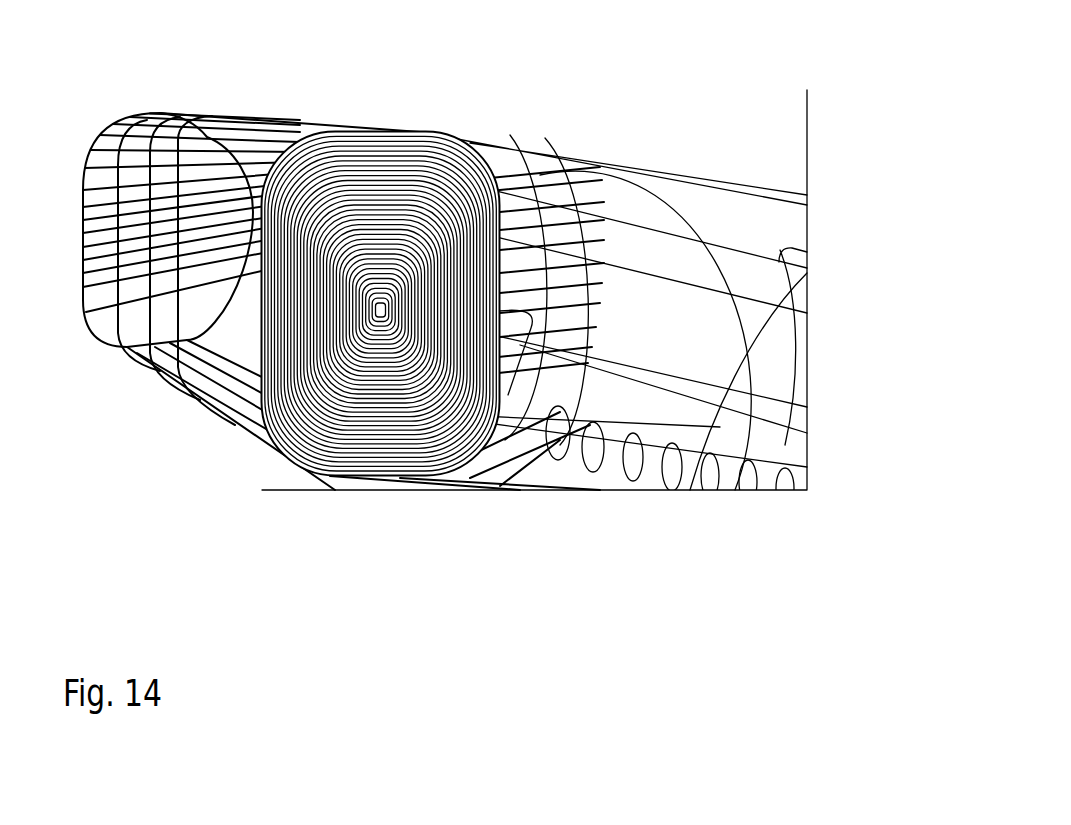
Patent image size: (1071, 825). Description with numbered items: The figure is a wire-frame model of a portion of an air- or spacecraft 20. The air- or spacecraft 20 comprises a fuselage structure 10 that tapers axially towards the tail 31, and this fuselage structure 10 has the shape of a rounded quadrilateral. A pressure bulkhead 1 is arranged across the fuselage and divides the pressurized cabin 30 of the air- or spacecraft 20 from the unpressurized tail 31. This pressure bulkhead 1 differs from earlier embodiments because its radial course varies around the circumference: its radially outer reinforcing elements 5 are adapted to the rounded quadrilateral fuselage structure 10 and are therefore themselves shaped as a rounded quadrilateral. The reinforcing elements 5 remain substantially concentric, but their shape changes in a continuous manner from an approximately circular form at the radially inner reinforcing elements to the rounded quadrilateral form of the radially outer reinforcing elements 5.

The pressure bulkhead 1 is at (381, 253).
The reinforcing elements 5 is at (313, 187).
The fuselage structure 10 is at (135, 350).
The air- or spacecraft 20 is at (445, 314).
The pressurized cabin 30 is at (568, 515).
The tail 31 is at (343, 303).